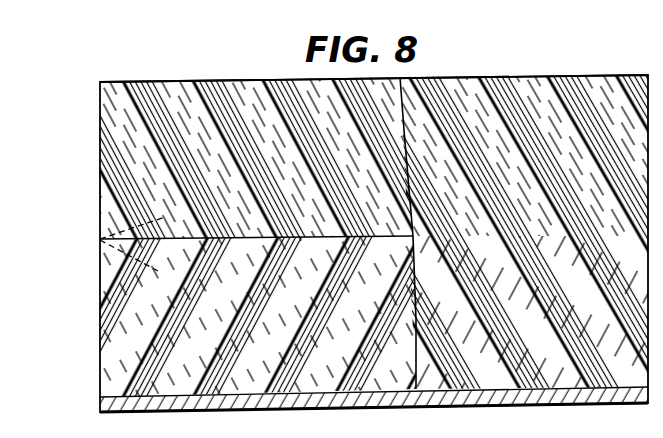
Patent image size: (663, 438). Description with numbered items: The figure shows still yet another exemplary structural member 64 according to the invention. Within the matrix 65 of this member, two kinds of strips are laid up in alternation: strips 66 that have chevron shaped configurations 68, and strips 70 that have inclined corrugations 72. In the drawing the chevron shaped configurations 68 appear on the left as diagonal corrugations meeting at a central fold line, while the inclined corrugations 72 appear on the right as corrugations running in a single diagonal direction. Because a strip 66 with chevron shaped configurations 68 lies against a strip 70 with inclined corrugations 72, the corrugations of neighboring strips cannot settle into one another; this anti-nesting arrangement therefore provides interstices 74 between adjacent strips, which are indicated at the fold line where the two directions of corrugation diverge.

The structural member 64 is at (77, 185).
The matrix 65 is at (243, 70).
The strips having chevron shaped configurations 66 is at (192, 87).
The chevron shaped configurations 68 is at (153, 118).
The strips having inclined corrugations 70 is at (503, 75).
The inclined corrugations 72 is at (513, 95).
The interstices 74 is at (100, 239).